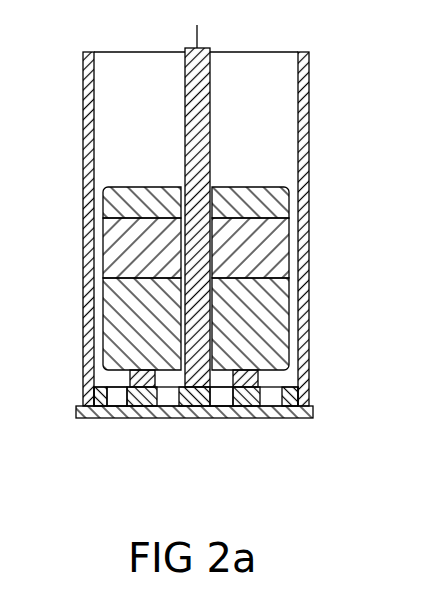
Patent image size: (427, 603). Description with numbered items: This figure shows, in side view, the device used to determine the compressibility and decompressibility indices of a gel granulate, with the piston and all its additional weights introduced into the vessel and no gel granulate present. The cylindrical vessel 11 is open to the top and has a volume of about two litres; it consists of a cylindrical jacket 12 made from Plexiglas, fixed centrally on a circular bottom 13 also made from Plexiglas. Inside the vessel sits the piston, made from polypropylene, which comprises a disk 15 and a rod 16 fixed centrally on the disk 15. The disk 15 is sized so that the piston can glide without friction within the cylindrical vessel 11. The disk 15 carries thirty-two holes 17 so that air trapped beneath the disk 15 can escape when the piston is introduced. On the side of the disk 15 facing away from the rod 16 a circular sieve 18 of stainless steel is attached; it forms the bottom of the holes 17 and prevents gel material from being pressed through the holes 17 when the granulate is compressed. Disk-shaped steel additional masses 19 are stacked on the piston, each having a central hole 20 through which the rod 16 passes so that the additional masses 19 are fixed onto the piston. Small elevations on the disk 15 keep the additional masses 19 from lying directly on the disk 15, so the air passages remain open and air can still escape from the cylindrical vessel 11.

The cylindrical vessel 11 is at (309, 118).
The cylindrical jacket 12 is at (82, 172).
The circular bottom 13 is at (278, 418).
The disk 15 is at (310, 392).
The rod 16 is at (211, 157).
The holes 17 is at (120, 392).
The circular sieve 18 is at (217, 407).
The additional masses 19 is at (262, 252).
The hole 20 is at (158, 187).